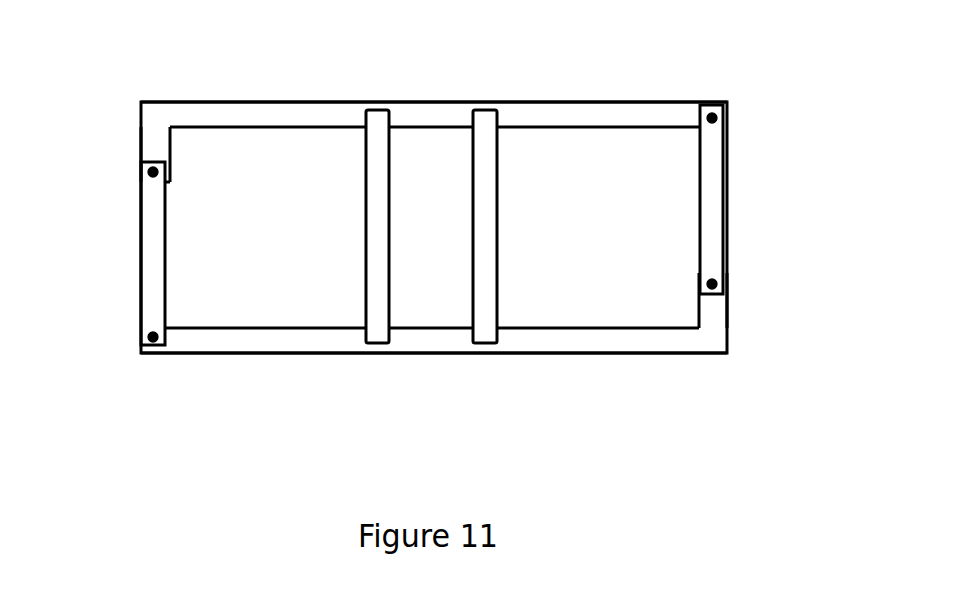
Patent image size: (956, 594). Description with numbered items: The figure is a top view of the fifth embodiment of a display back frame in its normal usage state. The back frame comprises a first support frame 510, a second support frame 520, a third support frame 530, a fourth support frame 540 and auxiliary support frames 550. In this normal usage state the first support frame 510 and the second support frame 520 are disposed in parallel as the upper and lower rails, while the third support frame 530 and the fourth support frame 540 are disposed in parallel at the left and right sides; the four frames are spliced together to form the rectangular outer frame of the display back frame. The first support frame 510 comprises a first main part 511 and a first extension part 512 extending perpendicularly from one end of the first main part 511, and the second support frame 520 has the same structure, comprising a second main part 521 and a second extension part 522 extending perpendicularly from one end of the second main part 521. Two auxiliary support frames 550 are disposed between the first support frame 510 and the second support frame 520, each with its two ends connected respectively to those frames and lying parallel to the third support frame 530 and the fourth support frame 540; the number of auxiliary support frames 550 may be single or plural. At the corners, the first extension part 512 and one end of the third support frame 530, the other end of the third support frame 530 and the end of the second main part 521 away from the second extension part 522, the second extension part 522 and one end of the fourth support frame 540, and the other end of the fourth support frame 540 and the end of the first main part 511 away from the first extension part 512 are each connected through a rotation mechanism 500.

The rotation mechanism 500 is at (158, 172).
The first support frame 510 is at (503, 90).
The first main part 511 is at (418, 112).
The first extension part 512 is at (155, 144).
The second support frame 520 is at (503, 364).
The second main part 521 is at (410, 333).
The second extension part 522 is at (715, 312).
The third support frame 530 is at (140, 220).
The fourth support frame 540 is at (728, 220).
The auxiliary support frame 550 is at (380, 226).